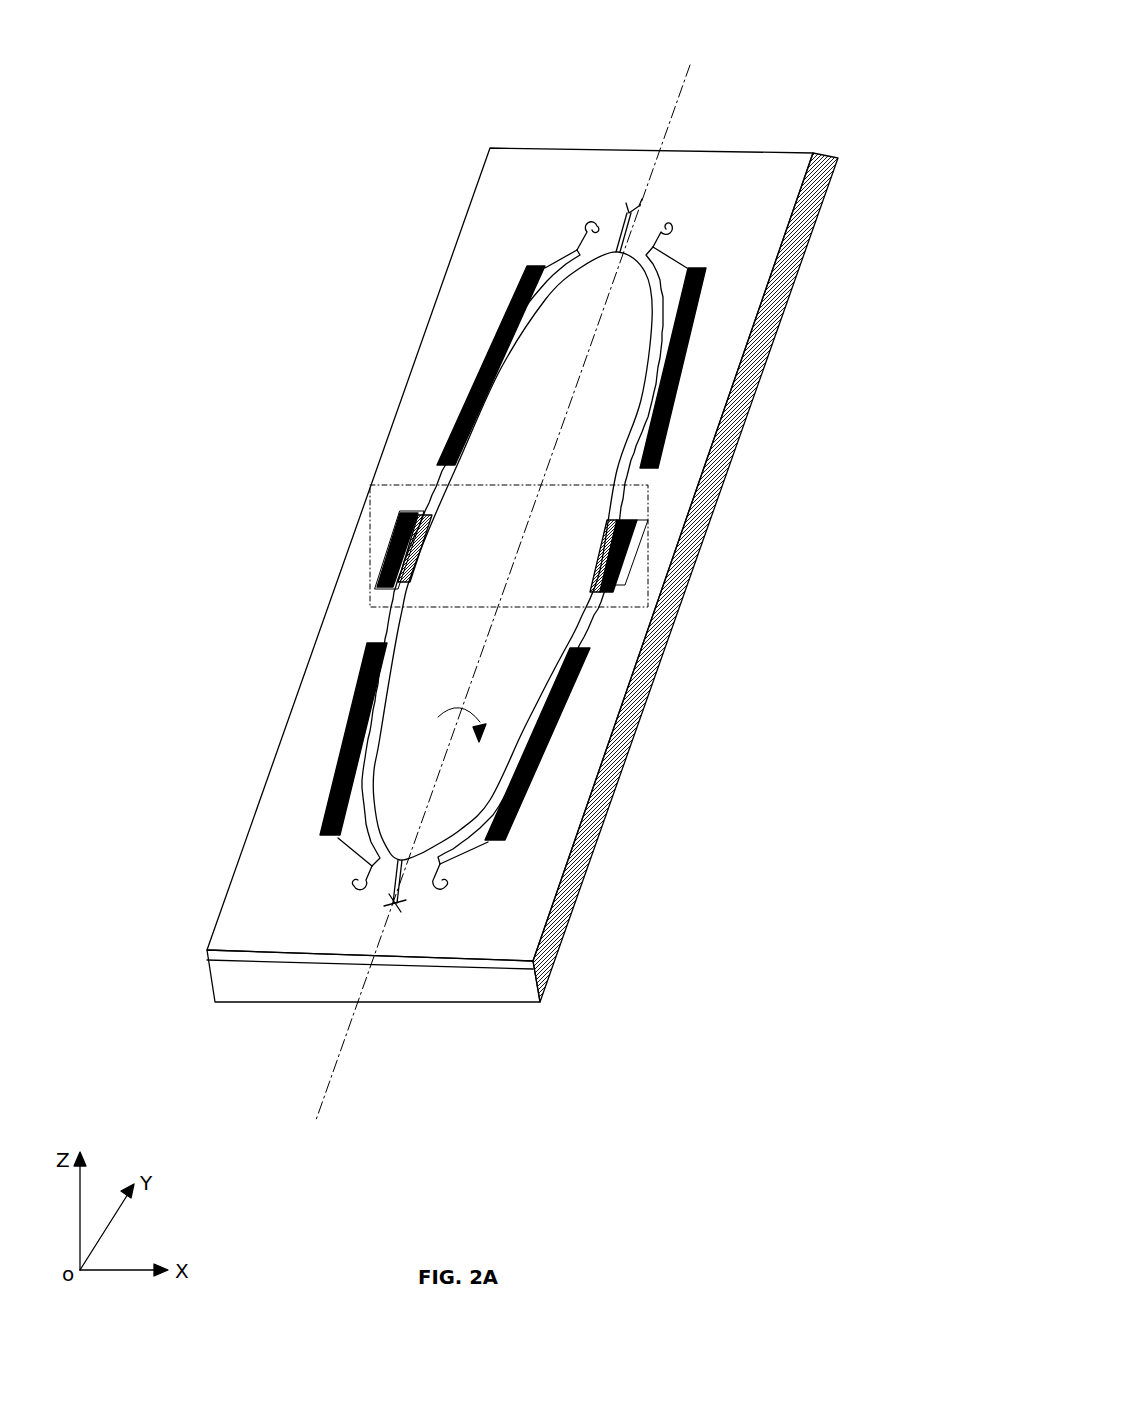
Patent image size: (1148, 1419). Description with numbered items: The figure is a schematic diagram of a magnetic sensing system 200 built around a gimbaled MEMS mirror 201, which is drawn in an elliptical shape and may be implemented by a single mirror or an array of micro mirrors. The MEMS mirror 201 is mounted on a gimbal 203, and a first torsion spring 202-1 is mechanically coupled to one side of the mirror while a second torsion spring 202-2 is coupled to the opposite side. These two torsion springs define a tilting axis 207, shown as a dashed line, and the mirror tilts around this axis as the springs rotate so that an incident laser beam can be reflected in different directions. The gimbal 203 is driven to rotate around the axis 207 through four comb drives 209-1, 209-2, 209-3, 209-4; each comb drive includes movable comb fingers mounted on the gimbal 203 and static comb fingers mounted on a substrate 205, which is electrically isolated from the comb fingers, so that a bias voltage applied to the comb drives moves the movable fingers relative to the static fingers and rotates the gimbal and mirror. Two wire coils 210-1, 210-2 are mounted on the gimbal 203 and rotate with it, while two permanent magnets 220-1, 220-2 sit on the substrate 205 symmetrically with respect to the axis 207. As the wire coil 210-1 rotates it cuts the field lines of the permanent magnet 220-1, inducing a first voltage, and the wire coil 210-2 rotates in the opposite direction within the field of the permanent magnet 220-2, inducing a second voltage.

The magnetic sensing system 200 is at (560, 601).
The MEMS mirror 201 is at (638, 297).
The first torsion spring 202-1 is at (628, 212).
The second torsion spring 202-2 is at (393, 883).
The gimbal 203 is at (660, 257).
The substrate 205 is at (547, 888).
The axis 207 is at (690, 78).
The comb drive 209-1 is at (672, 420).
The comb drive 209-2 is at (495, 318).
The comb drive 209-3 is at (533, 763).
The comb drive 209-4 is at (350, 718).
The wire coil 210-1 is at (410, 545).
The wire coil 210-2 is at (615, 570).
The permanent magnet 220-1 is at (397, 513).
The permanent magnet 220-2 is at (632, 550).